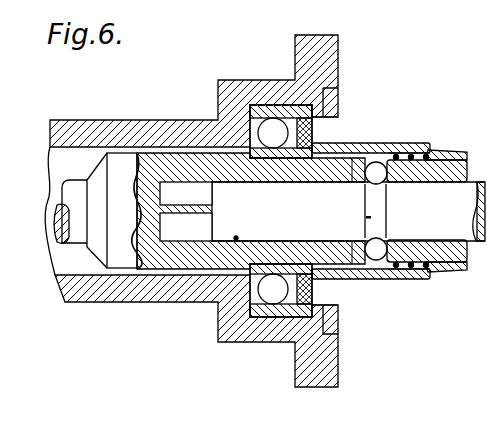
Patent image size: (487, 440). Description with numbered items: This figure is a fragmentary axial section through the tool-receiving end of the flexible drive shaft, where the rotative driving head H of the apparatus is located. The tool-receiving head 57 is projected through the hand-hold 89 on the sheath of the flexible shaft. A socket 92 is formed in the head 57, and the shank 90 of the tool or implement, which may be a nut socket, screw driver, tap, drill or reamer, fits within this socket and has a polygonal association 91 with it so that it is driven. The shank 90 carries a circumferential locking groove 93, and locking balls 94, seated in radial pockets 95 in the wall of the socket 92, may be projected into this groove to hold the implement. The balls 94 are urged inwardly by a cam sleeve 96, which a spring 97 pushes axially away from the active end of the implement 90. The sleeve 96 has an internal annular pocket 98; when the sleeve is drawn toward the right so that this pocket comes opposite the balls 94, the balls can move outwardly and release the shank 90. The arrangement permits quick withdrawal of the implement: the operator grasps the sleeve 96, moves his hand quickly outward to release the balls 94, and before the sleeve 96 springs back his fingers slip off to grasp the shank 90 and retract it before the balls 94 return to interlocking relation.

The hand-hold 89 is at (140, 128).
The rotative driving head H is at (355, 137).
The tool-receiving head 57 is at (173, 270).
The polygonal association 91 is at (173, 227).
The socket 92 is at (236, 240).
The circumferential locking groove 93 is at (365, 217).
The locking balls 94 is at (377, 162).
The shank 90 is at (431, 195).
The radial pockets 95 is at (375, 262).
The cam sleeve 96 is at (402, 268).
The spring 97 is at (427, 277).
The internal annular pocket 98 is at (352, 252).